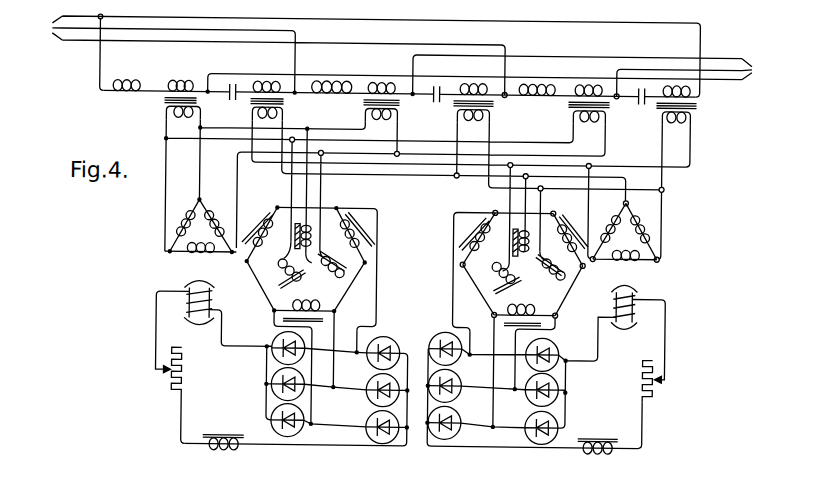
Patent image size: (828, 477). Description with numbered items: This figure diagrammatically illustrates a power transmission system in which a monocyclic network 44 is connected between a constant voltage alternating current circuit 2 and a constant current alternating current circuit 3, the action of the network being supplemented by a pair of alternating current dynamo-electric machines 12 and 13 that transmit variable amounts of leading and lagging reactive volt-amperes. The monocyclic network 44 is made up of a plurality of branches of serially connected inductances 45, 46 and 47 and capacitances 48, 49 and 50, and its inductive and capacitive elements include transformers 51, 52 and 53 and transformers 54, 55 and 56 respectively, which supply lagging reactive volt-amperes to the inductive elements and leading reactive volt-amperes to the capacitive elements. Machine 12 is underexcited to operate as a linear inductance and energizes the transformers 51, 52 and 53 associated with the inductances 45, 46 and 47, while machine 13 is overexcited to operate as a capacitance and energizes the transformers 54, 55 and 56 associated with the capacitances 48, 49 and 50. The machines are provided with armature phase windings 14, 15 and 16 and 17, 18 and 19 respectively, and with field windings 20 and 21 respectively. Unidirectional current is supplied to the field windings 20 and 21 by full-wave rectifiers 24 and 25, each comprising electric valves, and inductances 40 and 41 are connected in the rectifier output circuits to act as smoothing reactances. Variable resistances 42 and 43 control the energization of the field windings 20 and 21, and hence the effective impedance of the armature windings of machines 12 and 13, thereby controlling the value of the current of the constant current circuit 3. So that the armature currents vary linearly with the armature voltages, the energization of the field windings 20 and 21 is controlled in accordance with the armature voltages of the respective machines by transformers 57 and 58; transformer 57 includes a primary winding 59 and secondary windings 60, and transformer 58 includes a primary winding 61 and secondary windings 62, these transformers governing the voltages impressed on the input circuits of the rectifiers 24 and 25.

The constant voltage alternating current circuit 2 is at (366, 57).
The constant current alternating current circuit 3 is at (485, 75).
The alternating current dynamo-electric machine 12 is at (167, 275).
The alternating current dynamo-electric machine 13 is at (670, 282).
The armature phase winding 14 is at (218, 215).
The armature phase winding 15 is at (200, 239).
The armature phase winding 16 is at (184, 215).
The armature phase winding 17 is at (642, 218).
The armature phase winding 18 is at (625, 247).
The armature phase winding 19 is at (610, 218).
The field winding 20 is at (215, 297).
The field winding 21 is at (612, 299).
The rectifier 24 is at (346, 415).
The rectifier 25 is at (521, 412).
The inductance 40 is at (221, 453).
The inductance 41 is at (602, 453).
The variable resistance 42 is at (187, 374).
The variable resistance 43 is at (641, 378).
The monocyclic network 44 is at (384, 62).
The inductance 45 is at (128, 83).
The inductance 46 is at (328, 100).
The inductance 47 is at (535, 100).
The capacitance 48 is at (231, 103).
The capacitance 49 is at (435, 103).
The capacitance 50 is at (640, 103).
The transformer 51 is at (165, 104).
The transformer 52 is at (366, 104).
The transformer 53 is at (572, 106).
The transformer 54 is at (286, 104).
The transformer 55 is at (494, 106).
The transformer 56 is at (696, 106).
The transformer 57 is at (317, 295).
The transformer 58 is at (535, 295).
The primary winding 59 is at (325, 237).
The secondary windings 60 is at (384, 237).
The primary winding 61 is at (546, 244).
The secondary windings 62 is at (479, 218).